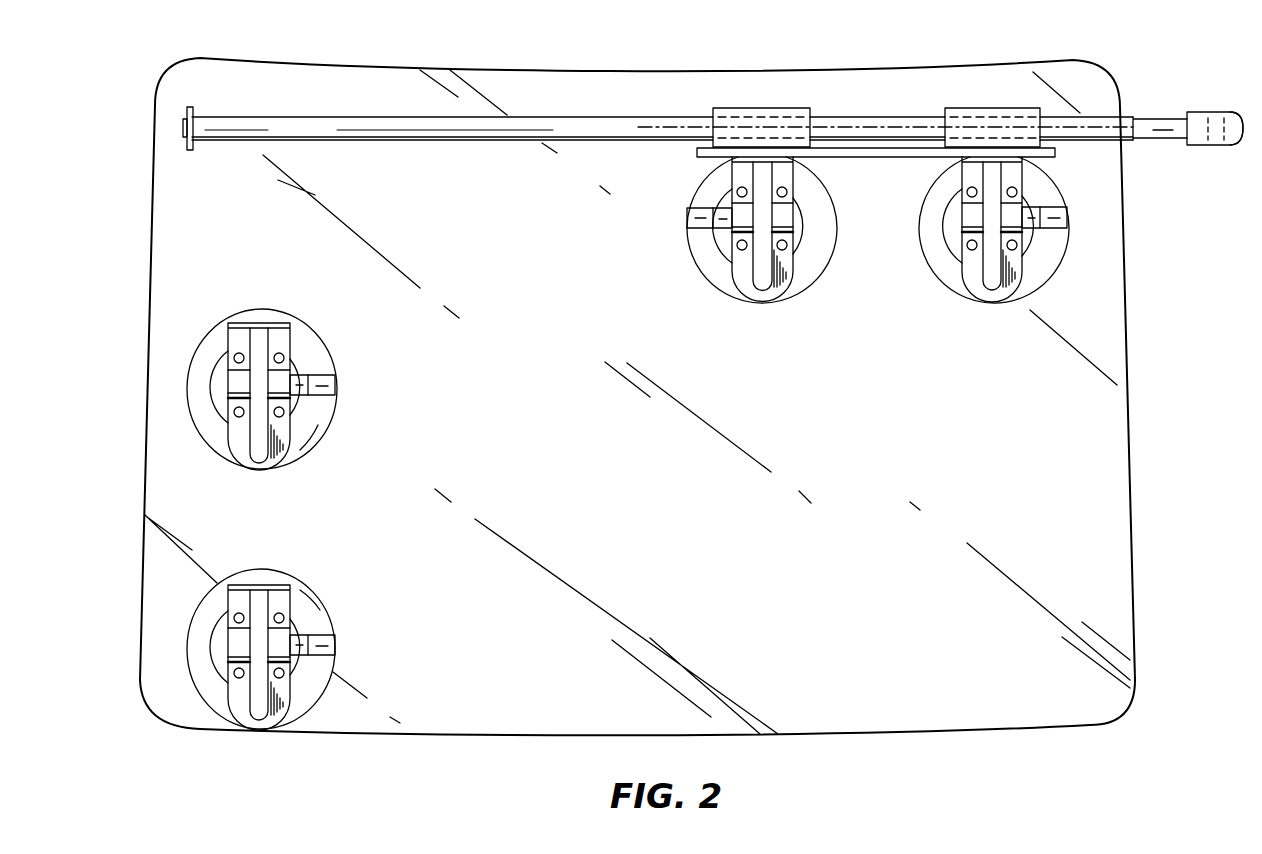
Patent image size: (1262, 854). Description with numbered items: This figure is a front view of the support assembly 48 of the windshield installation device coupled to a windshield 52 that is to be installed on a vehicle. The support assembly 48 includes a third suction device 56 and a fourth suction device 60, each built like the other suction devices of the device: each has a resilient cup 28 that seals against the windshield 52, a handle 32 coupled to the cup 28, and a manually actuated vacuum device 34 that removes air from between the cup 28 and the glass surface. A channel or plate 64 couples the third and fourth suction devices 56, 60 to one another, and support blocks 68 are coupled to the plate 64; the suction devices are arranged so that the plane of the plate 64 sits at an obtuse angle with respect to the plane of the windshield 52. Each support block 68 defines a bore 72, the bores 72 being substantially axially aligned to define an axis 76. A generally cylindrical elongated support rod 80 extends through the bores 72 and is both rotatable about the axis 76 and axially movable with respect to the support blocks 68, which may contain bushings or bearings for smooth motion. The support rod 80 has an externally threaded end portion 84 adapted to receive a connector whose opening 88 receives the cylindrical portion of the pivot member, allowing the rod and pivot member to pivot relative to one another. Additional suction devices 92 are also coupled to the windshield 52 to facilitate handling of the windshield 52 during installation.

The resilient cup 28 is at (213, 343).
The handle 32 is at (258, 447).
The manually actuated vacuum device 34 is at (298, 368).
The support assembly 48 is at (935, 386).
The windshield 52 is at (562, 467).
The third suction device 56 is at (785, 263).
The fourth suction device 60 is at (1020, 262).
The plate 64 is at (882, 157).
The support blocks 68 is at (732, 108).
The bore 72 is at (783, 117).
The axis 76 is at (888, 127).
The support rod 80 is at (588, 123).
The end portion 84 is at (1234, 147).
The opening 88 is at (1213, 112).
The additional suction devices 92 is at (308, 420).